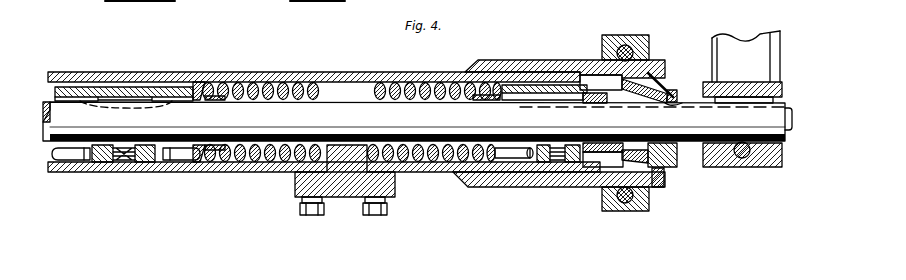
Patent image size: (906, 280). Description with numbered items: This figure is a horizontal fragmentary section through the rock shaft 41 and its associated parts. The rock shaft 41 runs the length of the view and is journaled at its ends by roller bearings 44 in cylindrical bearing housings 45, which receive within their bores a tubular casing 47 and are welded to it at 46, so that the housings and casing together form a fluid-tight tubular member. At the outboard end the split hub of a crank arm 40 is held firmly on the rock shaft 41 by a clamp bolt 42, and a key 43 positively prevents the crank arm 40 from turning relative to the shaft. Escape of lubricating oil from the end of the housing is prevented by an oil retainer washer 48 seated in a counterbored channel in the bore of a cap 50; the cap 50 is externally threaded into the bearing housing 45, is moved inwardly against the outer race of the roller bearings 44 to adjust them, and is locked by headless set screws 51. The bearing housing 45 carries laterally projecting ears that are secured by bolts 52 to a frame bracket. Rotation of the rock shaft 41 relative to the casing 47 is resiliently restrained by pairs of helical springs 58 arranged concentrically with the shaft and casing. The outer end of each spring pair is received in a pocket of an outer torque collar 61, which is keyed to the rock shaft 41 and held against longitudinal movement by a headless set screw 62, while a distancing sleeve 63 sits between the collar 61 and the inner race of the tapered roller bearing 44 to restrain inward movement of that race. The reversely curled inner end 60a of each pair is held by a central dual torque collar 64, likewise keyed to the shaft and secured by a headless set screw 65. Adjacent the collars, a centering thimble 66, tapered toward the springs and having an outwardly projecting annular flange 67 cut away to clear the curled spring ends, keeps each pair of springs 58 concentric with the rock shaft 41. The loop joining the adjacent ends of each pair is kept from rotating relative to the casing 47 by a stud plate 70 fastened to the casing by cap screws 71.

The crank arm 40 is at (745, 40).
The rock shaft 41 is at (417, 121).
The clamp bolt 42 is at (745, 159).
The key 43 is at (762, 103).
The roller bearings 44 is at (626, 118).
The bearing housings 45 is at (492, 62).
The weld 46 is at (458, 178).
The tubular casing 47 is at (118, 72).
The oil retainer washer 48 is at (676, 104).
The cap 50 is at (668, 168).
The headless set screws 51 is at (660, 189).
The bolts 52 is at (625, 38).
The helical springs 58 is at (58, 164).
The reversely curled inner end 60a is at (75, 163).
The outer torque collar 61 is at (520, 103).
The headless set screw 62 is at (556, 163).
The distancing sleeve 63 is at (603, 155).
The central dual torque collar 64 is at (165, 87).
The headless set screw 65 is at (128, 162).
The centering thimble 66 is at (214, 142).
The annular flange 67 is at (198, 84).
The stud plate 70 is at (322, 203).
The cap screws 71 is at (373, 216).